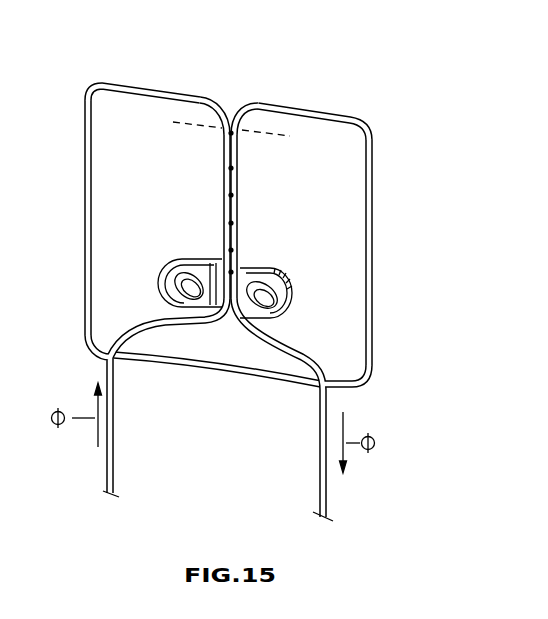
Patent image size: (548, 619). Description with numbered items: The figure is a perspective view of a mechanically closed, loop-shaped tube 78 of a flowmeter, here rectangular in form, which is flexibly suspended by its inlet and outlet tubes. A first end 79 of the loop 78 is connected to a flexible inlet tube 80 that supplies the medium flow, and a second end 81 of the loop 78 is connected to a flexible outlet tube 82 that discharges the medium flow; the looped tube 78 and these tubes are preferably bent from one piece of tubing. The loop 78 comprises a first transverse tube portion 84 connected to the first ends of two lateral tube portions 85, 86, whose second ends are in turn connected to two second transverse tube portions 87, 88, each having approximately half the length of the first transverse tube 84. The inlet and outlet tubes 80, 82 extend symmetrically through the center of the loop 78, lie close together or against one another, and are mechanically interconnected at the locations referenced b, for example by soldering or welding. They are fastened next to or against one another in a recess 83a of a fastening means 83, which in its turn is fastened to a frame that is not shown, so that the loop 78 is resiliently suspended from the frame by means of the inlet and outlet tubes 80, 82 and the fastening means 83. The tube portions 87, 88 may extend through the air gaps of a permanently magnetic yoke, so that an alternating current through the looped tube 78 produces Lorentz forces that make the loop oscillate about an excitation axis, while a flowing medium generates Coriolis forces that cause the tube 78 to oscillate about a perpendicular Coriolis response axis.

The loop-shaped tube 78 is at (246, 277).
The first end 79 is at (205, 81).
The inlet tube 80 is at (223, 183).
The second end 81 is at (253, 86).
The outlet tube 82 is at (238, 181).
The fastening means 83 is at (273, 275).
The recess 83a is at (193, 258).
The first transverse tube portion 84 is at (222, 368).
The lateral tube portion 85 is at (85, 225).
The lateral tube portion 86 is at (372, 260).
The second transverse tube portion 87 is at (148, 85).
The second transverse tube portion 88 is at (312, 106).
The interconnection locations b is at (223, 168).